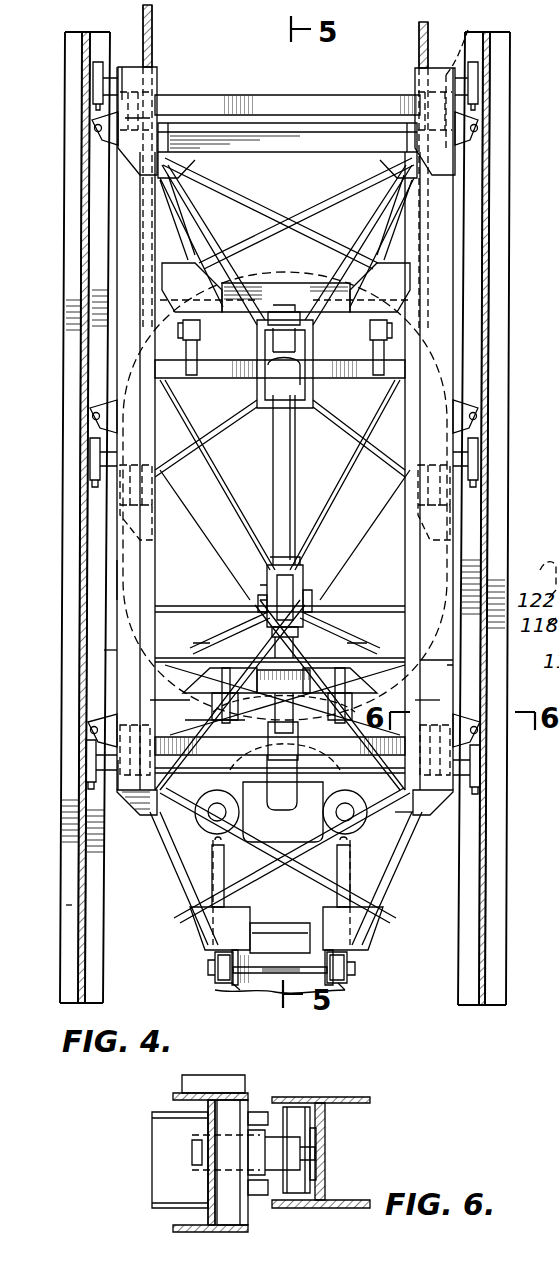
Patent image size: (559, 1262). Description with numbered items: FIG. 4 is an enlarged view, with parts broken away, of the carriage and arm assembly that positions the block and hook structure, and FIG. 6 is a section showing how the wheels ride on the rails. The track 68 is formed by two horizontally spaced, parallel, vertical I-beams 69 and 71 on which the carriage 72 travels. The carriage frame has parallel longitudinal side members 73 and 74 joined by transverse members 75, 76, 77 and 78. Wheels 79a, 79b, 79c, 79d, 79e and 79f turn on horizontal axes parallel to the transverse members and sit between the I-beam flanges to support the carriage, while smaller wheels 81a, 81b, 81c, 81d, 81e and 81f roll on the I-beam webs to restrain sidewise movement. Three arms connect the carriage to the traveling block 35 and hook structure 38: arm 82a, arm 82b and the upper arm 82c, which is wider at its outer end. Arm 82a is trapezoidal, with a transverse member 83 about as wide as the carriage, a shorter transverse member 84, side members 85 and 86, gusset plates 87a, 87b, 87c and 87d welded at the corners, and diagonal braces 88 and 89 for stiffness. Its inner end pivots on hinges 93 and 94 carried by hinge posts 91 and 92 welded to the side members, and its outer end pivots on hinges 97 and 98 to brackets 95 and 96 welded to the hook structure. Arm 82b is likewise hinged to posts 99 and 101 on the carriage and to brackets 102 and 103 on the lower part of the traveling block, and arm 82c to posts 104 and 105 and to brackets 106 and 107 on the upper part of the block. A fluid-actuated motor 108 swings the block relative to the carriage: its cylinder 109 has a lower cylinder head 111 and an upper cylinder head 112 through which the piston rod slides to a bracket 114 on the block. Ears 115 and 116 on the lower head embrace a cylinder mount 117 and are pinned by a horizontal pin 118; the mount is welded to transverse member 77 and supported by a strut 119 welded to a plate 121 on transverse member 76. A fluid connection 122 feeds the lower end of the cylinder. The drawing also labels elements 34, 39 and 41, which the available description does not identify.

In FIG. 4, the cable 34 is at (153, 35).
In FIG. 4, the traveling block 35 is at (410, 314).
In FIG. 4, the hook structure 38 is at (262, 978).
In FIG. 4, the roller 39 is at (329, 815).
In FIG. 4, the roller 41 is at (234, 815).
In FIG. 4, the track 68 is at (60, 866).
In FIG. 4, the I-beam 69 is at (70, 907).
In FIG. 4, the I-beam 71 is at (500, 982).
In FIG. 6, the I-beam 71 is at (348, 1098).
In FIG. 4, the carriage 72 is at (118, 660).
In FIG. 4, the side member 73 is at (118, 578).
In FIG. 4, the side member 74 is at (455, 664).
In FIG. 6, the side member 74 is at (172, 1096).
In FIG. 4, the transverse member 75 is at (183, 105).
In FIG. 4, the transverse member 76 is at (181, 378).
In FIG. 4, the transverse member 77 is at (158, 625).
In FIG. 4, the transverse member 78 is at (182, 712).
In FIG. 6, the transverse member 78 is at (165, 1136).
In FIG. 4, the wheel 79a is at (96, 72).
In FIG. 4, the wheel 79b is at (92, 457).
In FIG. 4, the wheel 79c is at (88, 752).
In FIG. 4, the wheel 79d is at (478, 72).
In FIG. 4, the wheel 79e is at (478, 452).
In FIG. 4, the wheel 79f is at (478, 772).
In FIG. 6, the wheel 79f is at (295, 1112).
In FIG. 4, the smaller wheel 81a is at (92, 130).
In FIG. 4, the smaller wheel 81b is at (90, 414).
In FIG. 4, the smaller wheel 81c is at (88, 712).
In FIG. 4, the smaller wheel 81d is at (478, 135).
In FIG. 4, the smaller wheel 81e is at (478, 414).
In FIG. 4, the smaller wheel 81f is at (476, 738).
In FIG. 6, the smaller wheel 81f is at (315, 1148).
In FIG. 4, the arm 82a is at (385, 886).
In FIG. 4, the arm 82b is at (392, 606).
In FIG. 4, the upper arm 82c is at (350, 186).
In FIG. 4, the transverse member 83 is at (410, 812).
In FIG. 4, the shorter transverse member 84 is at (300, 938).
In FIG. 4, the side member 85 is at (170, 860).
In FIG. 4, the side member 86 is at (398, 862).
In FIG. 4, the gusset plate 87a is at (205, 920).
In FIG. 4, the gusset plate 87b is at (140, 808).
In FIG. 4, the gusset plate 87c is at (432, 800).
In FIG. 4, the gusset plate 87d is at (365, 920).
In FIG. 4, the diagonal brace 88 is at (248, 864).
In FIG. 4, the diagonal brace 89 is at (320, 862).
In FIG. 4, the hinge post 91 is at (128, 735).
In FIG. 4, the hinge post 92 is at (432, 735).
In FIG. 6, the hinge post 92 is at (235, 1088).
In FIG. 4, the hinge 93 is at (148, 738).
In FIG. 4, the hinge 94 is at (428, 738).
In FIG. 4, the bracket 95 is at (224, 985).
In FIG. 4, the bracket 96 is at (345, 986).
In FIG. 4, the hinge 97 is at (210, 975).
In FIG. 4, the hinge 98 is at (356, 968).
In FIG. 4, the hinge post 99 is at (118, 493).
In FIG. 4, the hinge post 101 is at (450, 490).
In FIG. 4, the bracket 102 is at (190, 712).
In FIG. 4, the bracket 103 is at (388, 668).
In FIG. 4, the post 104 is at (153, 95).
In FIG. 4, the post 105 is at (468, 30).
In FIG. 4, the bracket 106 is at (198, 352).
In FIG. 4, the bracket 107 is at (375, 352).
In FIG. 4, the motor 108 is at (322, 482).
In FIG. 4, the cylinder 109 is at (273, 545).
In FIG. 4, the cylinder head 111 is at (262, 578).
In FIG. 4, the cylinder head 112 is at (312, 388).
In FIG. 4, the bracket 114 is at (276, 318).
In FIG. 4, the ear 115 is at (262, 620).
In FIG. 4, the ear 116 is at (298, 616).
In FIG. 4, the cylinder mount 117 is at (296, 562).
In FIG. 4, the horizontal pin 118 is at (302, 602).
In FIG. 4, the strut 119 is at (283, 453).
In FIG. 4, the plate 121 is at (280, 438).
In FIG. 4, the fluid connection 122 is at (312, 585).